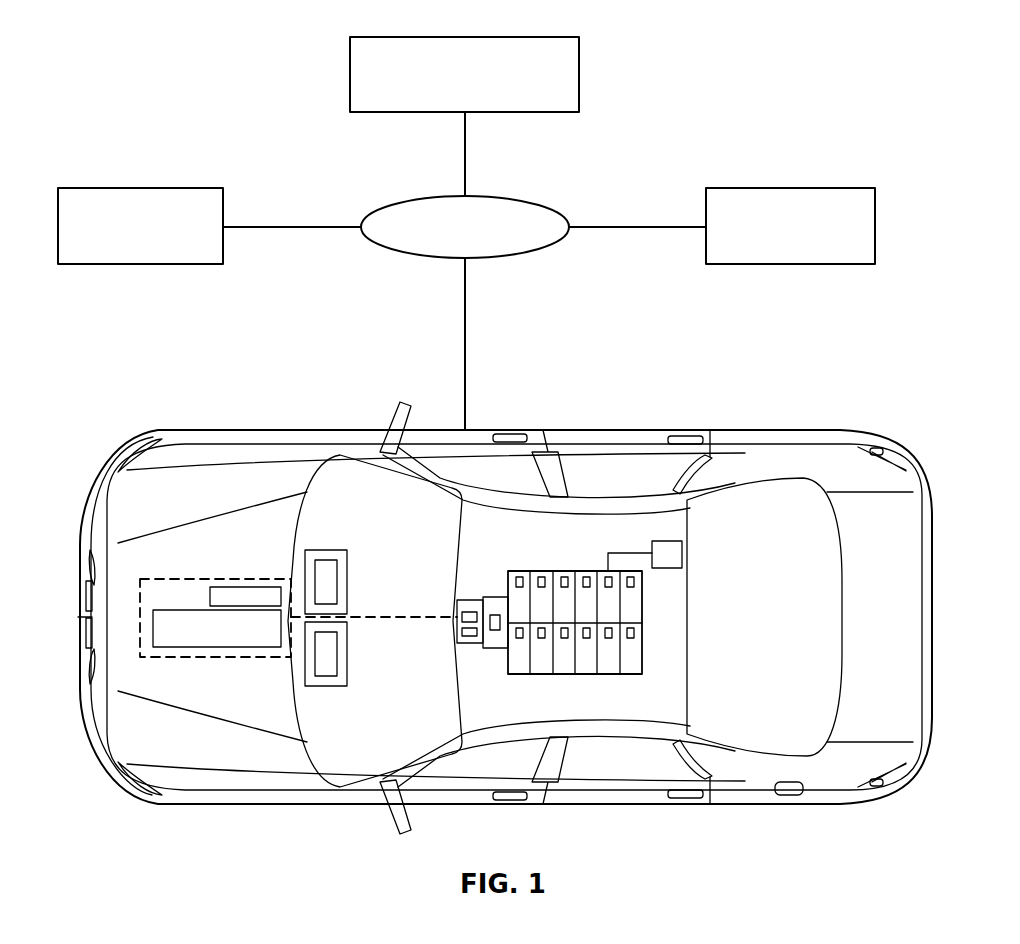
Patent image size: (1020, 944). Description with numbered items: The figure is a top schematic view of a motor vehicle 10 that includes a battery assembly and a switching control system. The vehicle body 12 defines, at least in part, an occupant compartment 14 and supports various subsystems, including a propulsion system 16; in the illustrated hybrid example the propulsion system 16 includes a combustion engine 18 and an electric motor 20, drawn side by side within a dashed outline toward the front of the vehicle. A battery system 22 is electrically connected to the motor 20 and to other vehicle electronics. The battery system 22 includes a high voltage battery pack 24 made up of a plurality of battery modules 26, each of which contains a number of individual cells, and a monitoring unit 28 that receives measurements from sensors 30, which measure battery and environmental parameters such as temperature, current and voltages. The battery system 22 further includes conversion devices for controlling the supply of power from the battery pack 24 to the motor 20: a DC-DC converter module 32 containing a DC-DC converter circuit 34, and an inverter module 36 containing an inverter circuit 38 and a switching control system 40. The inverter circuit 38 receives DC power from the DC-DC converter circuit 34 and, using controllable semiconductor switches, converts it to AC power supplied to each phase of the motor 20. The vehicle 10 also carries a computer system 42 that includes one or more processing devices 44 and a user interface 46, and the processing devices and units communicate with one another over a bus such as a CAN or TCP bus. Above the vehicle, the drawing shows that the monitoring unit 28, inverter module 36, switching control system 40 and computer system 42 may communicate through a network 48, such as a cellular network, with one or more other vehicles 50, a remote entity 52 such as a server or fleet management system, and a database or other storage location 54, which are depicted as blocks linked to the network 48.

The motor vehicle 10 is at (76, 351).
The vehicle body 12 is at (553, 424).
The occupant compartment 14 is at (588, 733).
The propulsion system 16 is at (180, 577).
The combustion engine 18 is at (237, 648).
The electric motor 20 is at (260, 587).
The battery system 22 is at (595, 618).
The high voltage battery pack 24 is at (619, 618).
The battery modules 26 is at (538, 577).
The monitoring unit 28 is at (682, 557).
The sensors 30 is at (590, 577).
The DC-DC converter module 32 is at (496, 597).
The DC-DC converter circuit 34 is at (460, 599).
The inverter module 36 is at (457, 607).
The inverter circuit 38 is at (460, 614).
The switching control system 40 is at (460, 632).
The computer system 42 is at (345, 476).
The processing devices 44 is at (337, 583).
The user interface 46 is at (337, 652).
The network 48 is at (482, 241).
The other vehicles 50 is at (105, 188).
The remote entity 52 is at (538, 37).
The database or other storage location 54 is at (825, 188).